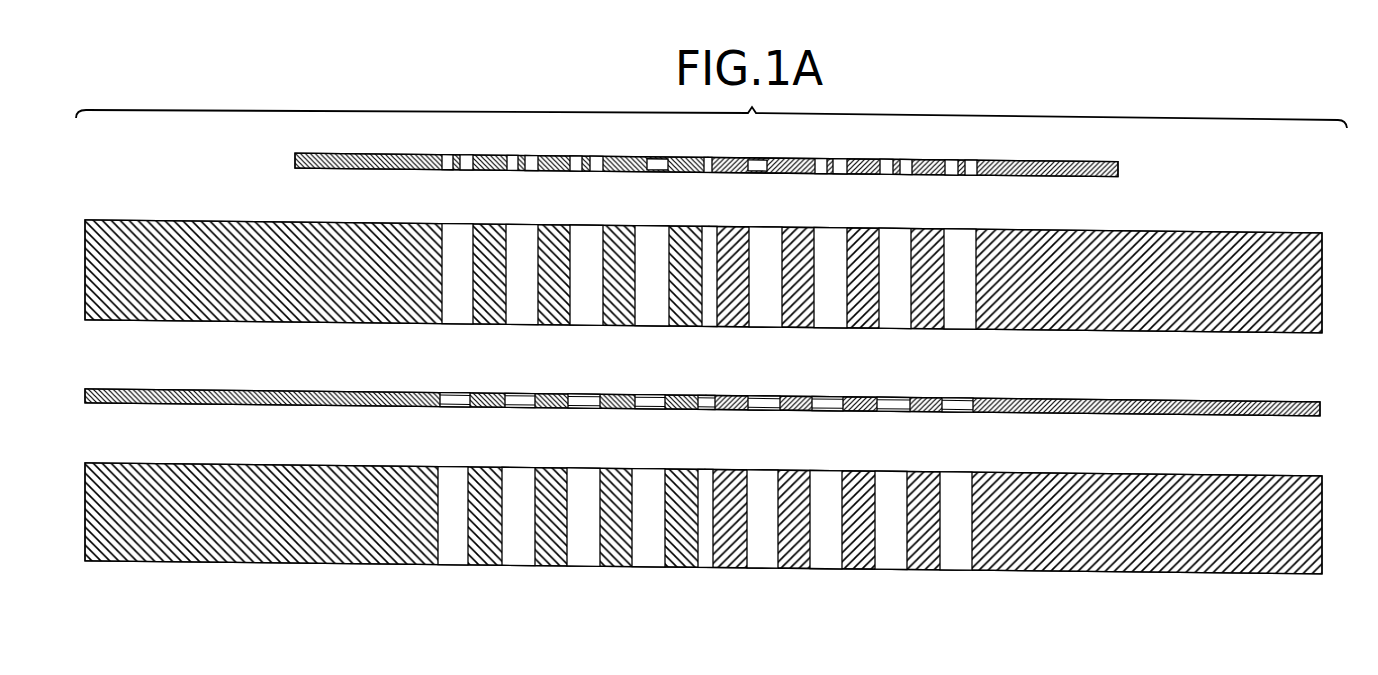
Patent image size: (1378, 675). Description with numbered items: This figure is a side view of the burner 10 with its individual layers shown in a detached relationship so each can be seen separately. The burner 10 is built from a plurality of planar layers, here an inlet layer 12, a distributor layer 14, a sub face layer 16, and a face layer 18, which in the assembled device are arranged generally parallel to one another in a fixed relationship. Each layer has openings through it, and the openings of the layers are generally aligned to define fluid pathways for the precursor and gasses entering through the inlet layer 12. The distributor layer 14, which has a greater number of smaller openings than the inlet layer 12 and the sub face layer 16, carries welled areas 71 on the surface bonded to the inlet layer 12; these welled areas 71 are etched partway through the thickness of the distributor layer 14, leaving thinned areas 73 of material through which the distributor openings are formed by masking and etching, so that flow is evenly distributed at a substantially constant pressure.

The burner 10 is at (1212, 181).
The inlet layer 12 is at (1321, 521).
The distributor layer 14 is at (1321, 410).
The sub face layer 16 is at (1324, 274).
The face layer 18 is at (1120, 164).
The welled areas 71 is at (703, 430).
The thinned areas 73 is at (706, 372).